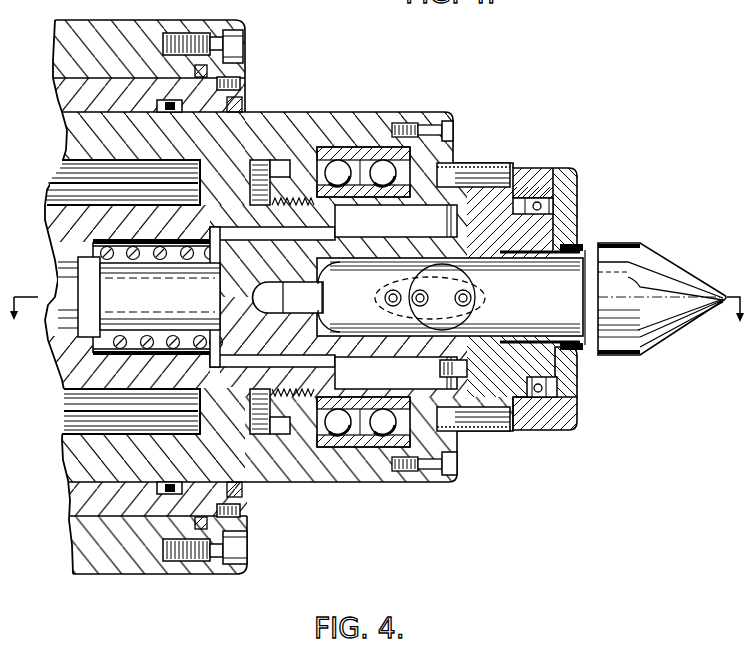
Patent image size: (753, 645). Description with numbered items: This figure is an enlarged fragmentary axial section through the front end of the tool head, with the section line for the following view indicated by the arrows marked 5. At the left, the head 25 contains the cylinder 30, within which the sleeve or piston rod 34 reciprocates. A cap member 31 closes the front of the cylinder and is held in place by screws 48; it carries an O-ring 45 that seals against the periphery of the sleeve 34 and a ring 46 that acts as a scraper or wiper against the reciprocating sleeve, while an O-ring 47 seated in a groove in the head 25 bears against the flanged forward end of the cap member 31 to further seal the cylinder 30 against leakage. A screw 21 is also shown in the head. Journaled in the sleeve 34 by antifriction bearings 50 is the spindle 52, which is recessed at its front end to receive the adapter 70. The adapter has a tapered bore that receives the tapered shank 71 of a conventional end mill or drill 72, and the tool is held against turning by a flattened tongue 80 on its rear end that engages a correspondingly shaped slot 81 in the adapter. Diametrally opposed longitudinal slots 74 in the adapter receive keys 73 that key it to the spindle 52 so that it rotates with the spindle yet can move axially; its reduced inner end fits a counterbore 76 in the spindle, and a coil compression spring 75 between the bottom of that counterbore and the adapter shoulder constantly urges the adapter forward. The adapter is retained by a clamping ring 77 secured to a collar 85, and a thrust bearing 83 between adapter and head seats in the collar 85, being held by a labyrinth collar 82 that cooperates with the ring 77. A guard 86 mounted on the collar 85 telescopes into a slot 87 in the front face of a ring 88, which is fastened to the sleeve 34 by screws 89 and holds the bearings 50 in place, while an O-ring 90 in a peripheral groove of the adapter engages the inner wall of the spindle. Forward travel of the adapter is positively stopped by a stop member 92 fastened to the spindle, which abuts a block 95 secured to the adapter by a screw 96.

The bolt 21 is at (170, 32).
The cylinder 30 is at (63, 185).
The spindle 52 is at (60, 222).
The coil compression spring 75 is at (60, 253).
The section line 5- 5 is at (376, 322).
The counterbore 76 is at (100, 347).
The cap member 31 is at (78, 500).
The head 25 is at (122, 568).
The O-ring 45 is at (177, 492).
The O-ring 47 is at (197, 553).
The ring 46 is at (240, 493).
The screws 48 is at (245, 548).
The sleeve or piston rod 34 is at (302, 470).
The tongue 80 is at (297, 418).
The ring 88 is at (432, 483).
The keys 73 is at (480, 170).
The O-ring 90 is at (495, 415).
The collar 85 is at (543, 424).
The clamping ring 77 is at (577, 415).
The labyrinth collar 82 is at (577, 370).
The tapered shank 71 is at (583, 250).
The end mill or drill 72 is at (673, 267).
The stop member 92 is at (483, 293).
The block 95 is at (380, 287).
The screw 96 is at (380, 318).
The slot 81 is at (257, 290).
The adapter 70 is at (278, 247).
The slots 74 is at (302, 307).
The antifriction bearings 50 is at (385, 163).
The screws 89 is at (428, 128).
The slot 87 is at (437, 165).
The guard 86 is at (510, 167).
The thrust bearing 83 is at (547, 167).